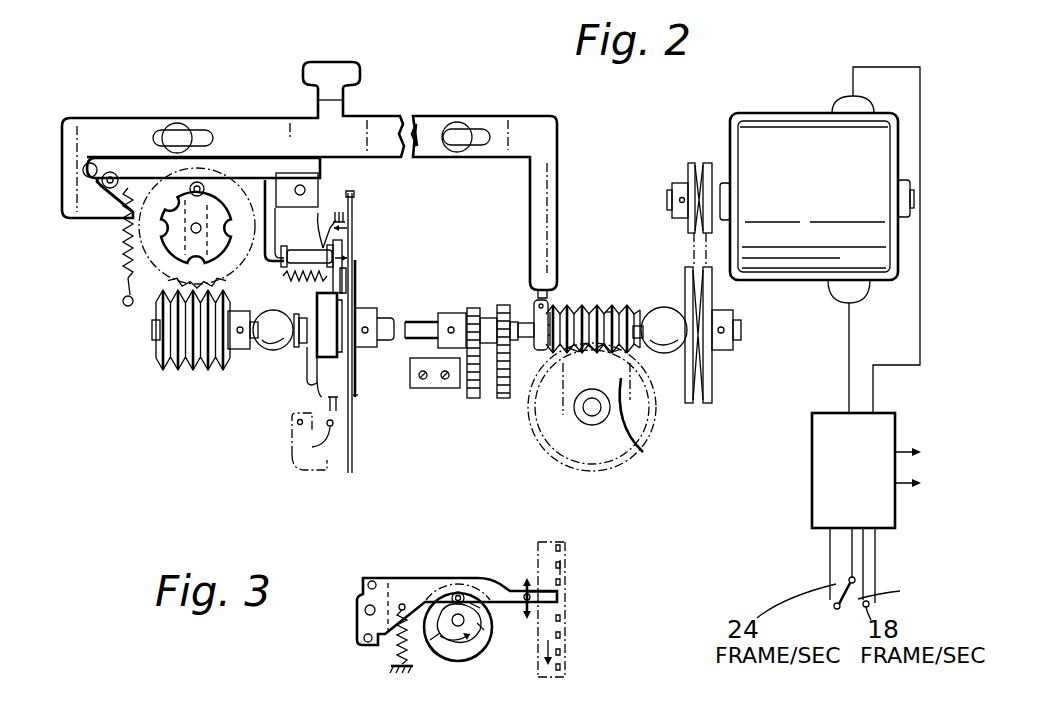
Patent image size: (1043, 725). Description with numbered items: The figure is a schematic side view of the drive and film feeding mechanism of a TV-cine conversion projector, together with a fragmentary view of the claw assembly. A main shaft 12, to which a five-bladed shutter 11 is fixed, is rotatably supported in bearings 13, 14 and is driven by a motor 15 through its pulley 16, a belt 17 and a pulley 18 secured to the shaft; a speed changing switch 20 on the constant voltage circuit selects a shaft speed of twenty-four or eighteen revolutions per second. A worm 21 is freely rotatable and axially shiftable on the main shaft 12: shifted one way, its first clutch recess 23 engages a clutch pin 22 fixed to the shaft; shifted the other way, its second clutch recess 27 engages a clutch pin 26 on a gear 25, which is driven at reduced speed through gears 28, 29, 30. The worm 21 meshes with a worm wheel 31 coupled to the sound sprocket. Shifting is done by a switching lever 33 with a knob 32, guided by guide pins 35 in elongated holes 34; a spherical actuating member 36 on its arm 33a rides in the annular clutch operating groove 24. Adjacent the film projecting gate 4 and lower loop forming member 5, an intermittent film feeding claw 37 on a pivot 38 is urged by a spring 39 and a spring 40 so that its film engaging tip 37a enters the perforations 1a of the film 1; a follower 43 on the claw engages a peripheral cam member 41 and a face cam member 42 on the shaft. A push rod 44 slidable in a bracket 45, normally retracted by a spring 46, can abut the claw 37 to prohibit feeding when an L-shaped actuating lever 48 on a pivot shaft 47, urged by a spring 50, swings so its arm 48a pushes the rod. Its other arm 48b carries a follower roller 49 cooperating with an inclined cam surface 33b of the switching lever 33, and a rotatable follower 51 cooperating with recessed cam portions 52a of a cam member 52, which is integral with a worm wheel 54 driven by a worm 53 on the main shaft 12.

In FIG. 2, the film 1 is at (337, 320).
In FIG. 3, the film 1 is at (566, 552).
In FIG. 3, the perforations 1a is at (566, 568).
In FIG. 2, the film projecting gate 4 is at (318, 213).
In FIG. 2, the lower loop forming member 5 is at (297, 460).
In FIG. 2, the shutter 11 is at (354, 205).
In FIG. 2, the main shaft 12 is at (418, 324).
In FIG. 3, the main shaft 12 is at (482, 632).
In FIG. 2, the bearing 13 is at (661, 353).
In FIG. 2, the bearing 14 is at (268, 351).
In FIG. 2, the motor 15 is at (772, 118).
In FIG. 2, the pulley 16 is at (688, 177).
In FIG. 2, the belt 17 is at (690, 242).
In FIG. 2, the pulley 18 is at (712, 382).
In FIG. 2, the speed changing switch 20 is at (892, 343).
In FIG. 2, the worm 21 is at (612, 303).
In FIG. 2, the clutch pin 22 is at (628, 305).
In FIG. 2, the first clutch recess 23 is at (668, 282).
In FIG. 2, the annular clutch operating groove 24 is at (545, 372).
In FIG. 2, the gear 25 is at (502, 304).
In FIG. 2, the clutch pin 26 is at (518, 310).
In FIG. 2, the second clutch recess 27 is at (530, 300).
In FIG. 2, the gear 28 is at (502, 399).
In FIG. 2, the gear 29 is at (472, 399).
In FIG. 2, the gear 30 is at (473, 306).
In FIG. 2, the worm wheel 31 is at (641, 452).
In FIG. 2, the knob 32 is at (353, 73).
In FIG. 2, the switching lever 33 is at (368, 150).
In FIG. 2, the arm 33a is at (548, 280).
In FIG. 2, the inclined cam surface 33b is at (84, 170).
In FIG. 2, the elongated holes 34 is at (200, 132).
In FIG. 2, the guide pins 35 is at (177, 124).
In FIG. 2, the spherical actuating member 36 is at (548, 304).
In FIG. 2, the intermittent film feeding claw 37 is at (342, 274).
In FIG. 3, the intermittent film feeding claw 37 is at (388, 582).
In FIG. 2, the film engaging tip 37a is at (328, 241).
In FIG. 3, the film engaging tip 37a is at (559, 597).
In FIG. 3, the pivot 38 is at (365, 611).
In FIG. 3, the spring 39 is at (392, 654).
In FIG. 2, the spring 40 is at (294, 346).
In FIG. 2, the peripheral cam member 41 is at (330, 347).
In FIG. 3, the peripheral cam member 41 is at (460, 648).
In FIG. 2, the face cam member 42 is at (306, 370).
In FIG. 3, the face cam member 42 is at (440, 646).
In FIG. 2, the follower 43 is at (347, 287).
In FIG. 3, the follower 43 is at (458, 591).
In FIG. 2, the push rod 44 is at (334, 254).
In FIG. 3, the push rod 44 is at (521, 624).
In FIG. 2, the bracket 45 is at (287, 220).
In FIG. 2, the spring 46 is at (240, 351).
In FIG. 2, the pivot shaft 47 is at (300, 184).
In FIG. 2, the actuating lever 48 is at (253, 182).
In FIG. 2, the arm 48a is at (286, 273).
In FIG. 2, the arm 48b is at (143, 176).
In FIG. 2, the follower roller 49 is at (106, 174).
In FIG. 2, the spring 50 is at (124, 259).
In FIG. 2, the rotatable follower 51 is at (202, 184).
In FIG. 2, the cam member 52 is at (168, 250).
In FIG. 2, the recessed cam portions 52a is at (160, 262).
In FIG. 2, the worm 53 is at (172, 372).
In FIG. 2, the worm wheel 54 is at (163, 283).